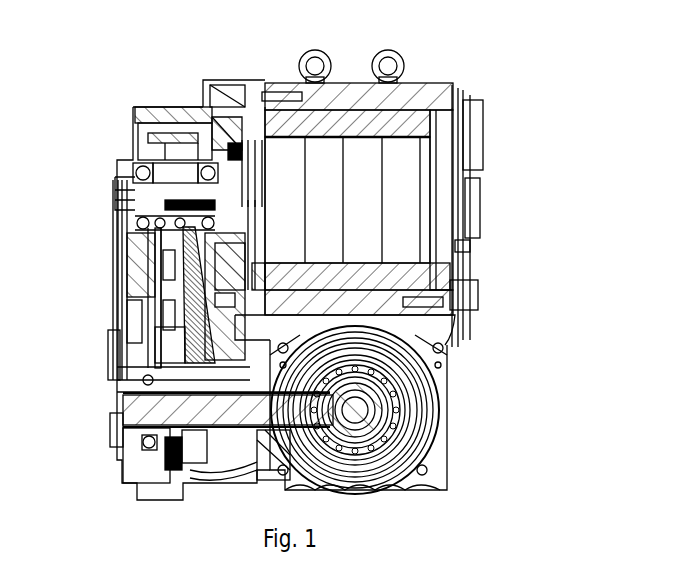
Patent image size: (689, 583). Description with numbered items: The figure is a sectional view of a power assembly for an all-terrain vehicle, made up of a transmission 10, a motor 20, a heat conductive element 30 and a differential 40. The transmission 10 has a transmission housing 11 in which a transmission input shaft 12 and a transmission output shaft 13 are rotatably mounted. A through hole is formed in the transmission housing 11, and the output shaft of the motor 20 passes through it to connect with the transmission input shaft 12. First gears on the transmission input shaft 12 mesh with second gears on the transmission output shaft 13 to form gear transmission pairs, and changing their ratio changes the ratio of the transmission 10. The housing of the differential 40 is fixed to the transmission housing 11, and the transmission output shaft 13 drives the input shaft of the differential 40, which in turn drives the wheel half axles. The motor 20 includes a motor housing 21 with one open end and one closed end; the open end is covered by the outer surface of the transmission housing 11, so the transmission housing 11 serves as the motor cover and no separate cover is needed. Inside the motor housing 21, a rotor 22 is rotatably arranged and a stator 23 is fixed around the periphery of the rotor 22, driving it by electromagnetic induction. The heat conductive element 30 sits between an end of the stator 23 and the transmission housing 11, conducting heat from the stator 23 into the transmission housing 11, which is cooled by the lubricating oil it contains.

The transmission 10 is at (167, 123).
The transmission housing 11 is at (133, 283).
The transmission input shaft 12 is at (132, 173).
The transmission output shaft 13 is at (122, 432).
The motor 20 is at (408, 117).
The motor housing 21 is at (317, 100).
The rotor 22 is at (210, 113).
The stator 23 is at (277, 90).
The heat conductive element 30 is at (230, 100).
The differential 40 is at (448, 397).